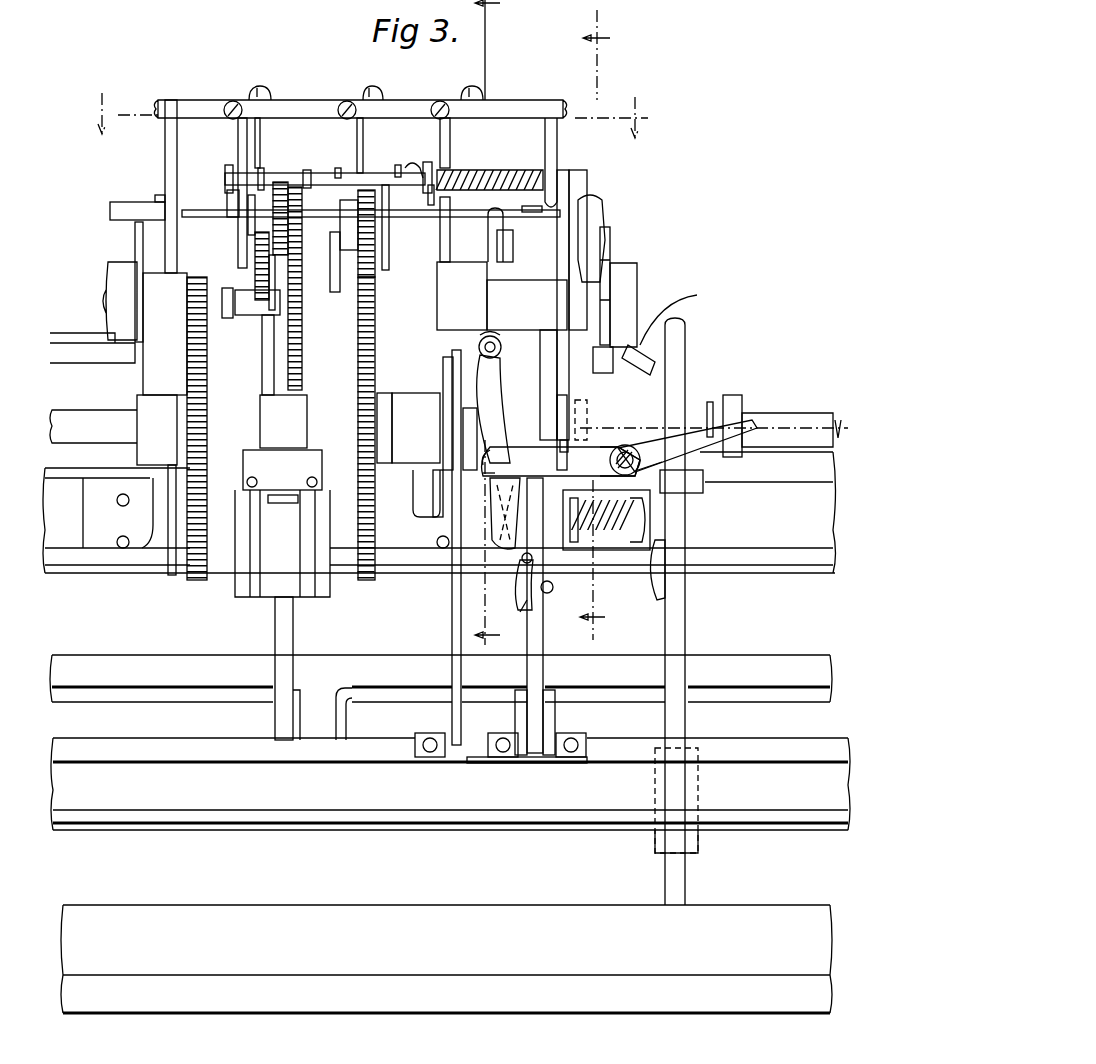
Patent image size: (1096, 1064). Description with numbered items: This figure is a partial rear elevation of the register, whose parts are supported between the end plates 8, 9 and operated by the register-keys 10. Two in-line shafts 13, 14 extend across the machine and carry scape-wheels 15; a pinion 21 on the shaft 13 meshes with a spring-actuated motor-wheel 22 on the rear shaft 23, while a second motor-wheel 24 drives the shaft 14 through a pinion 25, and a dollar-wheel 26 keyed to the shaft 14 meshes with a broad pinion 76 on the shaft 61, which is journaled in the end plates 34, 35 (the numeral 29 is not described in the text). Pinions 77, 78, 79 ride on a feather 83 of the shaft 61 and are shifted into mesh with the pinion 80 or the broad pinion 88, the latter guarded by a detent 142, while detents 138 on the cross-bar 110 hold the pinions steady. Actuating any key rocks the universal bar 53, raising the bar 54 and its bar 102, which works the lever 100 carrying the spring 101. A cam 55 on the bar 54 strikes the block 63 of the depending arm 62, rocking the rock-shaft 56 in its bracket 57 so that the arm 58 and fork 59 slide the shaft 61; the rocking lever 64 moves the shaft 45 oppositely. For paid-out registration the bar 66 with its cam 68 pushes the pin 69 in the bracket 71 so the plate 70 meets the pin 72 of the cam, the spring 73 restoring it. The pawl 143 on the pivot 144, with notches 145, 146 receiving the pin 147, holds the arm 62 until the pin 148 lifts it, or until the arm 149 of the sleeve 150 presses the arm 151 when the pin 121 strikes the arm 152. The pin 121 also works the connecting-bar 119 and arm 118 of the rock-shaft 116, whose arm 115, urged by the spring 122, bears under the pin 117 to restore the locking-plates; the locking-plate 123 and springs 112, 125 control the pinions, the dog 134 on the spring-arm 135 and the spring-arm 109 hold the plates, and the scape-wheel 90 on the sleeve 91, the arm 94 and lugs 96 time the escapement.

The end plate 8 is at (362, 115).
The end plate 9 is at (487, 329).
The register-key 10 is at (415, 435).
The shaft 13 is at (92, 292).
The shaft 14 is at (640, 345).
The scape-wheel 15 is at (615, 300).
The pinion 21 is at (190, 277).
The motor-wheel 22 is at (188, 428).
The shaft 23 is at (441, 428).
The motor-wheel 24 is at (384, 428).
The pinion 25 is at (376, 296).
The dollar-wheel 26 is at (302, 300).
The gear 29 is at (358, 412).
The end plate 34 is at (165, 138).
The end plate 35 is at (557, 133).
The shaft 45 is at (95, 356).
The universal bar 53 is at (450, 731).
The bar 54 is at (543, 640).
The cam 55 is at (518, 595).
The rock-shaft 56 is at (498, 335).
The bracket 57 is at (501, 344).
The arm 58 is at (503, 258).
The fork 59 is at (513, 236).
The shaft 61 is at (130, 202).
The depending arm 62 is at (493, 409).
The block 63 is at (508, 557).
The rocking lever 64 is at (600, 212).
The bar 66 is at (685, 614).
The cam 68 is at (652, 580).
The pin 69 is at (617, 532).
The plate 70 is at (570, 542).
The bracket 71 is at (612, 461).
The pin 72 is at (553, 592).
The spring 73 is at (603, 532).
The pinion 76 is at (285, 182).
The pinion 77 is at (252, 262).
The pinion 78 is at (376, 252).
The pinion 79 is at (416, 160).
The pinion 80 is at (255, 250).
The feather 83 is at (206, 217).
The broad pinion 88 is at (268, 280).
The scape-wheel 90 is at (462, 296).
The sleeve 91 is at (527, 305).
The arm 94 is at (431, 493).
The lug 96 is at (443, 380).
The lever 100 is at (470, 445).
The spring 101 is at (453, 395).
The bar 102 is at (452, 618).
The spring-arm 109 is at (345, 119).
The cross-bar 110 is at (360, 102).
The spring 112 is at (456, 239).
The arm 115 is at (228, 168).
The rock-shaft 116 is at (320, 173).
The pin 117 is at (357, 157).
The arm 118 is at (562, 172).
The connecting-bar 119 is at (547, 362).
The pin 121 is at (568, 453).
The spring 122 is at (523, 170).
The locking-plate 123 is at (344, 258).
The spring 125 is at (424, 180).
The dog 134 is at (218, 196).
The spring-arm 135 is at (230, 119).
The detent 138 is at (361, 194).
The detent 142 is at (270, 350).
The pawl 143 is at (561, 461).
The pivot 144 is at (624, 445).
The notch 145 is at (498, 457).
The notch 146 is at (504, 472).
The pin 147 is at (505, 513).
The pin 148 is at (527, 612).
The arm 149 is at (712, 402).
The sleeve 150 is at (687, 446).
The arm 151 is at (700, 472).
The arm 152 is at (261, 168).